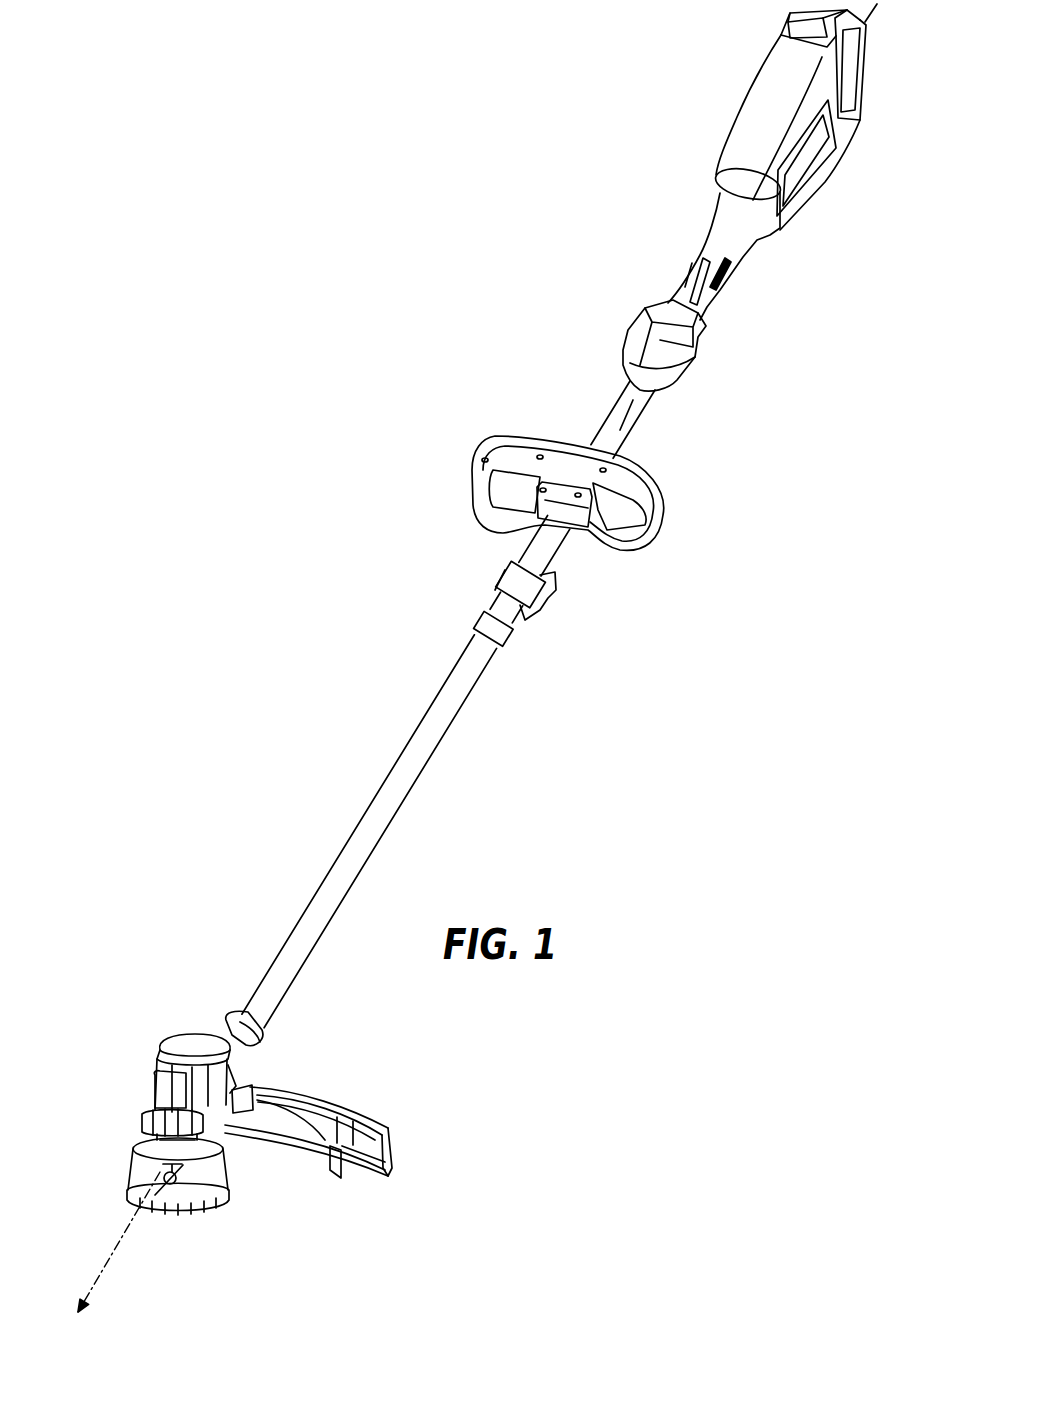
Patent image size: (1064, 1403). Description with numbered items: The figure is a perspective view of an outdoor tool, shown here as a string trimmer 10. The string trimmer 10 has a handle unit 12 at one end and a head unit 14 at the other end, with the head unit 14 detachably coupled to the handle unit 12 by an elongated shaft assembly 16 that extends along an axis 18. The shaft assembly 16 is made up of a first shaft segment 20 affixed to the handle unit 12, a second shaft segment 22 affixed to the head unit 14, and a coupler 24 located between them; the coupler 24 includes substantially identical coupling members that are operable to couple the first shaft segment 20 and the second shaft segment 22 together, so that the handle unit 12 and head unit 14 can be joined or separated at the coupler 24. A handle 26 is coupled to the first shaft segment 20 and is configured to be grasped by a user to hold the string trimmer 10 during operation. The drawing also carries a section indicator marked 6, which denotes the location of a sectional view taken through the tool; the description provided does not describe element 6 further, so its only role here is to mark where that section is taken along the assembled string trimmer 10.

The section line indicator 6 is at (878, 4).
The string trimmer 10 is at (714, 759).
The handle unit 12 is at (835, 174).
The head unit 14 is at (322, 1208).
The shaft assembly 16 is at (467, 740).
The axis 18 is at (110, 1258).
The first shaft segment 20 is at (605, 442).
The second shaft segment 22 is at (365, 850).
The coupler 24 is at (482, 566).
The handle 26 is at (658, 512).